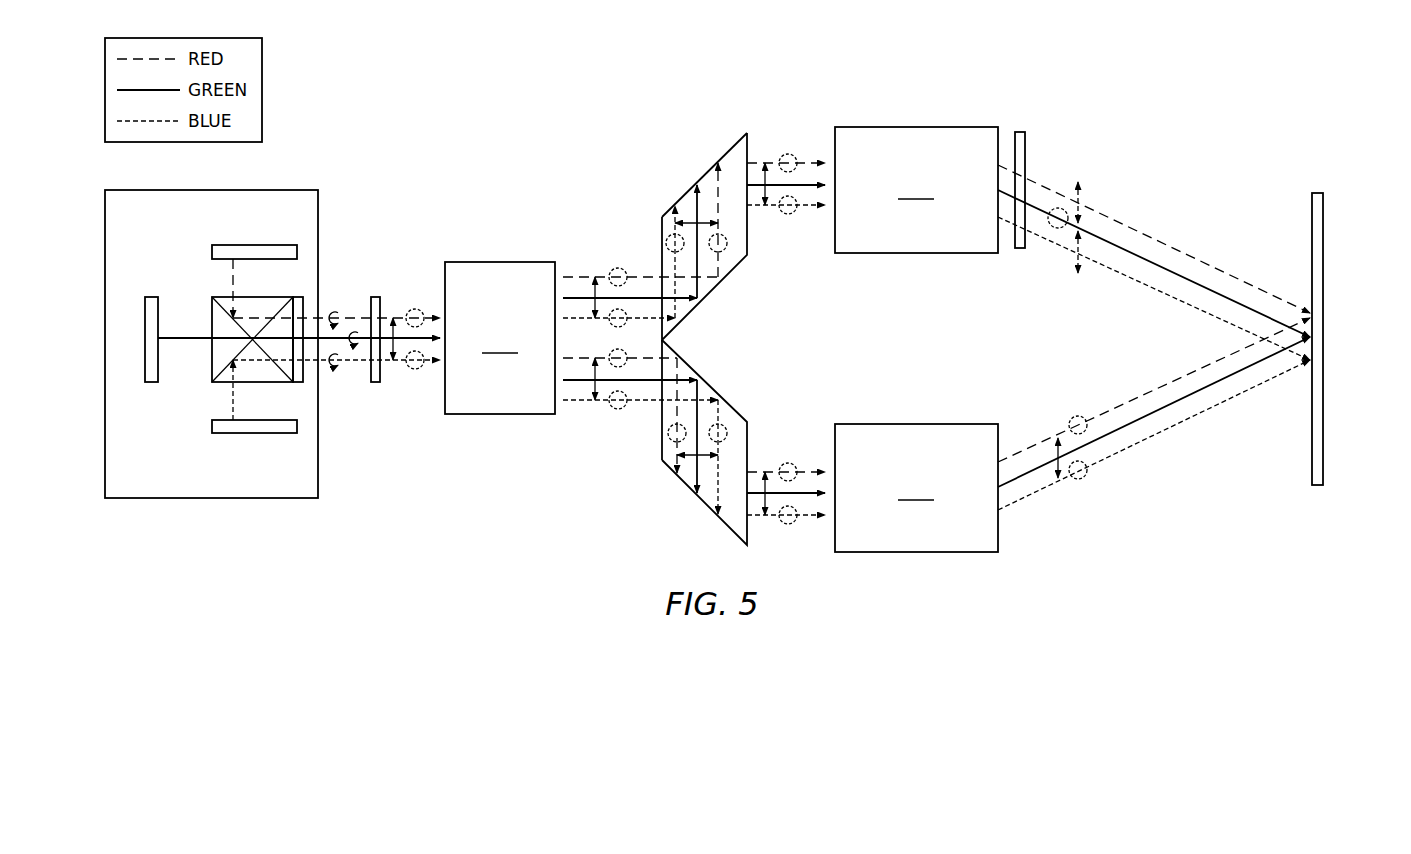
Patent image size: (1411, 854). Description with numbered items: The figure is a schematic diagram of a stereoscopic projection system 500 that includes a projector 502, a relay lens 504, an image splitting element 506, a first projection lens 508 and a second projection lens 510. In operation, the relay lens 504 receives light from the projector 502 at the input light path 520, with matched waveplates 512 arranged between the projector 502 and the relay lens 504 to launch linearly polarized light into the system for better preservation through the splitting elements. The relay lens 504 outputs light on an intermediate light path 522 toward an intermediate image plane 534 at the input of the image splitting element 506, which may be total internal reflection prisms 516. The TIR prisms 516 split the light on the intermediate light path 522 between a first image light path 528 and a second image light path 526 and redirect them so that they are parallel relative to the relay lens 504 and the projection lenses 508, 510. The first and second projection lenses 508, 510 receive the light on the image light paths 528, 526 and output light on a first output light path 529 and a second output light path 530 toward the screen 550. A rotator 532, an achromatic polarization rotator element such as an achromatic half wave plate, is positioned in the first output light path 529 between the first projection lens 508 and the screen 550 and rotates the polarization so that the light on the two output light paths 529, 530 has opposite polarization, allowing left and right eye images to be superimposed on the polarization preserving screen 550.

The stereoscopic projection system 500 is at (328, 590).
The projector 502 is at (162, 499).
The relay lens 504 is at (500, 338).
The image splitting element 506 is at (713, 386).
The first projection lens 508 is at (916, 190).
The second projection lens 510 is at (916, 488).
The matched waveplates 512 is at (303, 300).
The total internal reflection (TIR) prisms 516 is at (683, 200).
The input light path 520 is at (397, 368).
The intermediate light path 522 is at (583, 273).
The second image light path 526 is at (750, 440).
The first image light path 528 is at (750, 237).
The first output light path 529 is at (1122, 220).
The second output light path 530 is at (1106, 459).
The rotator 532 is at (1027, 148).
The intermediate image plane 534 is at (660, 408).
The screen 550 is at (1326, 238).